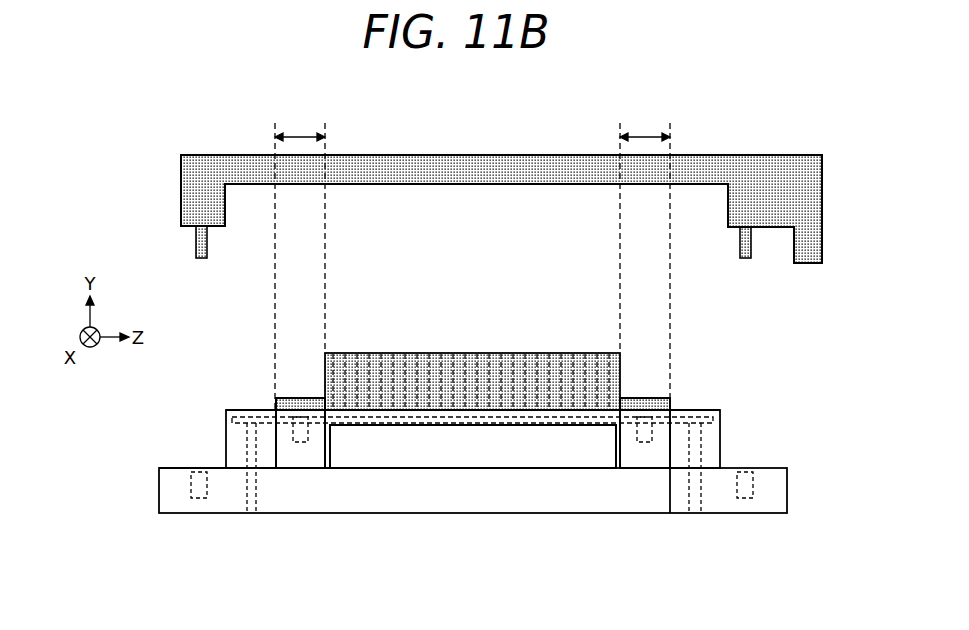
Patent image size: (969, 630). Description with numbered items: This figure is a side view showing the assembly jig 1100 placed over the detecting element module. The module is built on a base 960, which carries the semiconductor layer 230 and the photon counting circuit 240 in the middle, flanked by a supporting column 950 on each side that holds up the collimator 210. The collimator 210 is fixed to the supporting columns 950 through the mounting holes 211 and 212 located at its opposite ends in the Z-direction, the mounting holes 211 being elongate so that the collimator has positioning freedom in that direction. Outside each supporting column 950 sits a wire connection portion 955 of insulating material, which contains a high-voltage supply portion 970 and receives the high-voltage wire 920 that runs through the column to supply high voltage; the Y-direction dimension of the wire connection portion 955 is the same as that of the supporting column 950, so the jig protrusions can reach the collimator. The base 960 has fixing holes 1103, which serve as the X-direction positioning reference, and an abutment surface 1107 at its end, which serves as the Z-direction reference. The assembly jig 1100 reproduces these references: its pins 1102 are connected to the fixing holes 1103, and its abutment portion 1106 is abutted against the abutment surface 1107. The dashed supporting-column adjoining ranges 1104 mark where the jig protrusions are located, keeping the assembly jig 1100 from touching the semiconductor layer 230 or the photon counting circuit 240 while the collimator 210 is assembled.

The assembly jig 1100 is at (808, 132).
The pin 1102 is at (207, 243).
The fixing hole 1103 is at (200, 468).
The supporting-column adjoining range 1104 is at (472, 123).
The abutment portion 1106 is at (794, 250).
The abutment surface 1107 is at (788, 497).
The collimator 210 is at (630, 398).
The mounting hole 211 is at (645, 398).
The mounting hole 212 is at (303, 398).
The semiconductor layer 230 is at (528, 468).
The photon counting circuit 240 is at (473, 446).
The high-voltage wire 920 is at (680, 417).
The supporting column 950 is at (303, 455).
The wire connection portion 955 is at (240, 410).
The base 960 is at (183, 468).
The high-voltage supply portion 970 is at (250, 513).